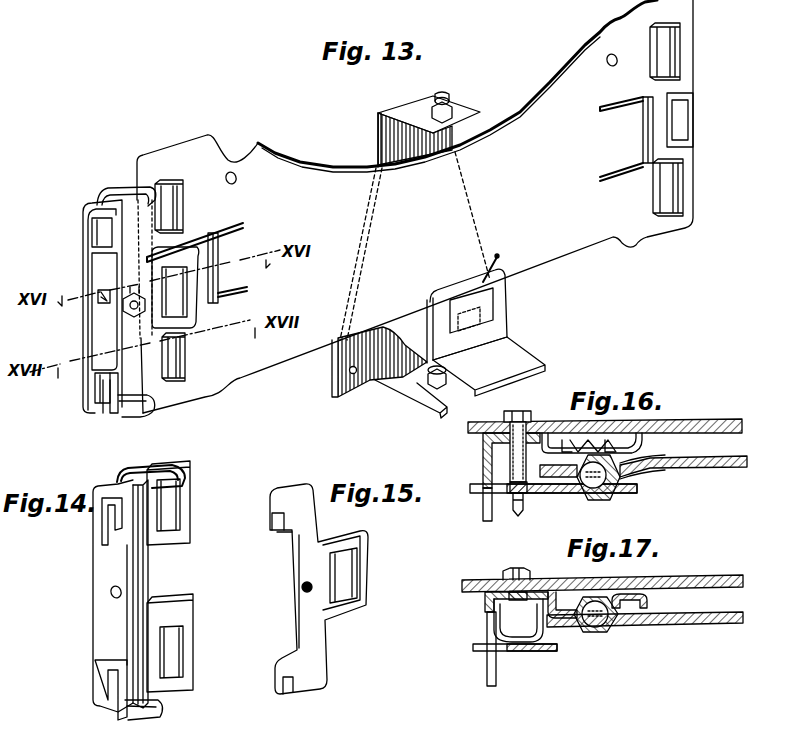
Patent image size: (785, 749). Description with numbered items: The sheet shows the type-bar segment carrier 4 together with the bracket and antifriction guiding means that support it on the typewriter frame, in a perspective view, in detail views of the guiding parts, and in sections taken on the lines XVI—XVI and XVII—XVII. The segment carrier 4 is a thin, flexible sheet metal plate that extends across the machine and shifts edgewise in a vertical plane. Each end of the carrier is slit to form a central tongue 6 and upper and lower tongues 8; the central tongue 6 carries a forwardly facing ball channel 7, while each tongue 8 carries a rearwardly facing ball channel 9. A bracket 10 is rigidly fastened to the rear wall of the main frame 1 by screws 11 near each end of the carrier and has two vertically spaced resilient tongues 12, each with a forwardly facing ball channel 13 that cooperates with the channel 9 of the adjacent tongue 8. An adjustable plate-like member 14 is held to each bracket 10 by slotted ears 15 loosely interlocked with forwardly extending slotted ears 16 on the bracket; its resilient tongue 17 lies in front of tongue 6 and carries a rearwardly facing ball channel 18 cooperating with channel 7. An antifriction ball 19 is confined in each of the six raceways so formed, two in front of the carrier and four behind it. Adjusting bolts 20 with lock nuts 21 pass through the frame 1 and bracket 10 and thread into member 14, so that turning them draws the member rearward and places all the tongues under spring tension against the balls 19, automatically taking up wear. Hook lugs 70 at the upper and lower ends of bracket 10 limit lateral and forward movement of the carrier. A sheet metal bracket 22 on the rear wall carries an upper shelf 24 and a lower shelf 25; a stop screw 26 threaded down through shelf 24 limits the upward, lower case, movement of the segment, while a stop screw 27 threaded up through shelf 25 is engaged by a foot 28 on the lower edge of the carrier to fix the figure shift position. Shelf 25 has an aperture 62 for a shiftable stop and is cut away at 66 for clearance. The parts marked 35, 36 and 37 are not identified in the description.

In FIG. 16, the main frame 1 is at (722, 433).
In FIG. 17, the main frame 1 is at (720, 588).
In FIG. 13, the segment carrier 4 is at (301, 170).
In FIG. 16, the segment carrier 4 is at (735, 470).
In FIG. 17, the segment carrier 4 is at (676, 627).
In FIG. 13, the central tongue 6 is at (650, 140).
In FIG. 16, the central tongue 6 is at (656, 472).
In FIG. 13, the ball channel 7 is at (688, 112).
In FIG. 16, the ball channel 7 is at (622, 460).
In FIG. 13, the upper and lower tongues 8 is at (186, 160).
In FIG. 16, the upper and lower tongues 8 is at (630, 463).
In FIG. 17, the upper and lower tongues 8 is at (563, 627).
In FIG. 13, the ball channel 9 is at (185, 212).
In FIG. 17, the ball channel 9 is at (609, 630).
In FIG. 13, the bracket 10 is at (95, 270).
In FIG. 14, the bracket 10 is at (100, 562).
In FIG. 16, the bracket 10 is at (483, 445).
In FIG. 17, the bracket 10 is at (486, 600).
In FIG. 17, the screws 11 is at (511, 571).
In FIG. 14, the resilient tongues 12 is at (190, 504).
In FIG. 16, the resilient tongues 12 is at (540, 422).
In FIG. 17, the resilient tongues 12 is at (552, 582).
In FIG. 14, the ball channel 13 is at (176, 498).
In FIG. 16, the ball channel 13 is at (566, 424).
In FIG. 15, the adjustable plate-like member 14 is at (300, 547).
In FIG. 16, the adjustable plate-like member 14 is at (553, 494).
In FIG. 17, the adjustable plate-like member 14 is at (528, 652).
In FIG. 13, the slotted ears 15 is at (92, 230).
In FIG. 15, the slotted ears 15 is at (274, 516).
In FIG. 17, the slotted ears 15 is at (478, 648).
In FIG. 13, the slotted ears 16 is at (117, 250).
In FIG. 14, the slotted ears 16 is at (105, 532).
In FIG. 16, the slotted ears 16 is at (483, 510).
In FIG. 17, the slotted ears 16 is at (486, 668).
In FIG. 13, the resilient tongue 17 is at (190, 297).
In FIG. 15, the resilient tongue 17 is at (366, 563).
In FIG. 16, the resilient tongue 17 is at (620, 492).
In FIG. 13, the ball channel 18 is at (186, 303).
In FIG. 15, the ball channel 18 is at (348, 597).
In FIG. 16, the ball channel 18 is at (612, 498).
In FIG. 16, the antifriction ball 19 is at (590, 430).
In FIG. 17, the antifriction ball 19 is at (595, 630).
In FIG. 13, the adjusting bolts 20 is at (102, 298).
In FIG. 16, the adjusting bolts 20 is at (510, 462).
In FIG. 13, the lock nuts 21 is at (133, 295).
In FIG. 16, the lock nuts 21 is at (516, 512).
In FIG. 13, the sheet metal bracket 22 is at (388, 137).
In FIG. 13, the shelf portion 24 is at (412, 112).
In FIG. 13, the shelf portion 25 is at (410, 398).
In FIG. 13, the adjustable stop screw 26 is at (452, 106).
In FIG. 13, the adjustable stop screw 27 is at (447, 383).
In FIG. 13, the foot 28 is at (340, 357).
In FIG. 13, the window 35 is at (494, 313).
In FIG. 13, the plate 36 is at (448, 292).
In FIG. 13, the pin 37 is at (502, 261).
In FIG. 13, the aperture 62 is at (482, 328).
In FIG. 13, the cut-away 66 is at (547, 370).
In FIG. 13, the hook lugs 70 is at (125, 192).
In FIG. 14, the hook lugs 70 is at (160, 461).
In FIG. 17, the hook lugs 70 is at (520, 628).